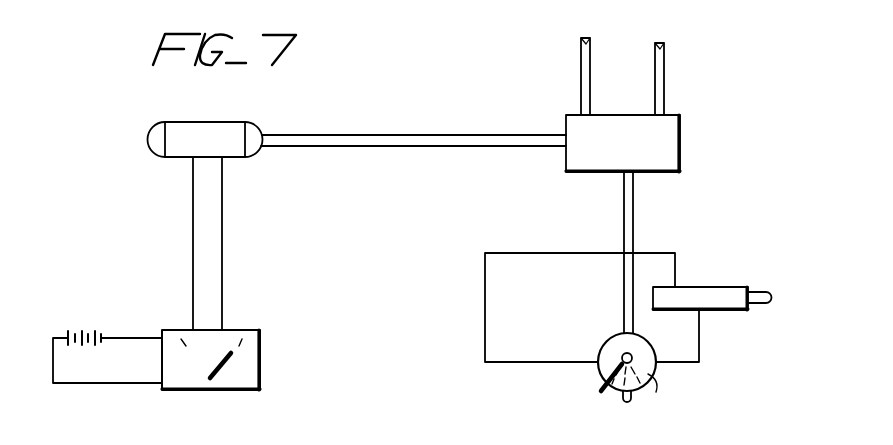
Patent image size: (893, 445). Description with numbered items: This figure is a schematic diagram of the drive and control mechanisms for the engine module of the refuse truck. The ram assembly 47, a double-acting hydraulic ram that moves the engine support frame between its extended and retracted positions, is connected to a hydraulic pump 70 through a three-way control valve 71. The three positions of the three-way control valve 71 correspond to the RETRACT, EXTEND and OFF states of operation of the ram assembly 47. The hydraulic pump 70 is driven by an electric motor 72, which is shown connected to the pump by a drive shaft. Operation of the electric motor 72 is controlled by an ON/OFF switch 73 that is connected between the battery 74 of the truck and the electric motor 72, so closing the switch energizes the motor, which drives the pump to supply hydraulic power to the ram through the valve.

The ram assembly 47 is at (723, 304).
The hydraulic pump 70 is at (680, 150).
The three-way control valve 71 is at (655, 367).
The electric motor 72 is at (228, 128).
The ON/OFF switch 73 is at (260, 362).
The battery 74 is at (82, 326).